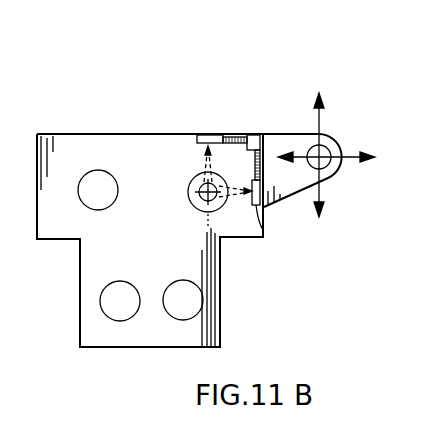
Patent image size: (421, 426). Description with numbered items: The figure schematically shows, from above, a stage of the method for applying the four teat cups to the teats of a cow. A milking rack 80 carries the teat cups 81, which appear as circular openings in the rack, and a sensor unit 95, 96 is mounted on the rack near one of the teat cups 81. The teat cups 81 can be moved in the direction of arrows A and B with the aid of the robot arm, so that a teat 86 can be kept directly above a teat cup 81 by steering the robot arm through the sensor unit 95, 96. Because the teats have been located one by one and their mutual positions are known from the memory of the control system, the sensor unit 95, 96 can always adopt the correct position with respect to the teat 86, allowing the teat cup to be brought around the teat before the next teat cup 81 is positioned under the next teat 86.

The milking rack 80 is at (160, 348).
The teat cup 81 is at (91, 174).
The teat 86 is at (222, 207).
The sensor unit 95 is at (250, 135).
The sensor unit 96 is at (200, 134).
The arrow A is at (320, 113).
The arrow B is at (353, 148).